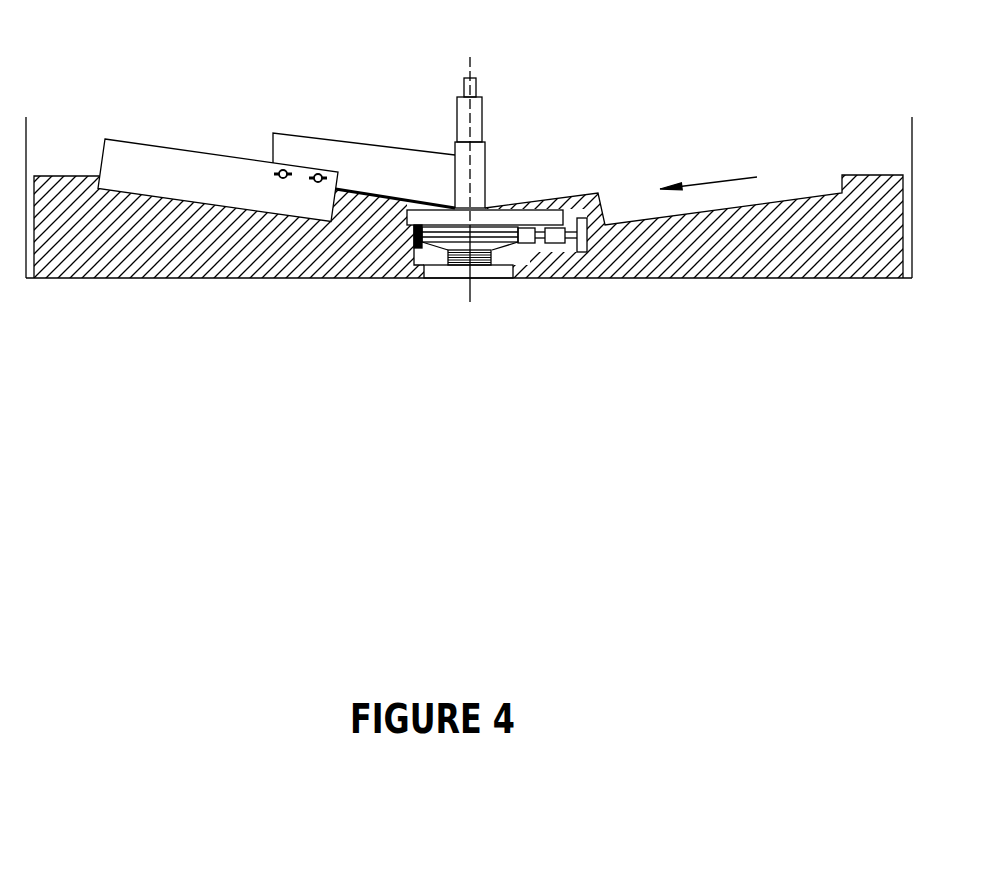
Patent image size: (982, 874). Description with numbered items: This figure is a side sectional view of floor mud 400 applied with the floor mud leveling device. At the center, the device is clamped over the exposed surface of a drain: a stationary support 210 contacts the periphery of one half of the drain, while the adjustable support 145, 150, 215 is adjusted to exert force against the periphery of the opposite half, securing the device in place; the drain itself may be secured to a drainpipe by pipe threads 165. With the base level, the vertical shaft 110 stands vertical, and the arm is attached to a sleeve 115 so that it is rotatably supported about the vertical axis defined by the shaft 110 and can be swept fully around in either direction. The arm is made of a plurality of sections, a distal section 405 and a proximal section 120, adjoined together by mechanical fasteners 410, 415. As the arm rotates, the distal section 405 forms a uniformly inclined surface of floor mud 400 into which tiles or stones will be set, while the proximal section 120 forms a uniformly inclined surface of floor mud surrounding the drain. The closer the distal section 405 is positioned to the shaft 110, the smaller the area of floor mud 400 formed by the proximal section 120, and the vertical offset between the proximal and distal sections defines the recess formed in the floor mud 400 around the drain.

The vertical shaft 110 is at (483, 117).
The sleeve 115 is at (485, 173).
The proximal section of the arm 120 is at (385, 157).
The adjustable support 145 is at (586, 252).
The adjustable support 150 is at (554, 245).
The pipe threads 165 is at (469, 265).
The stationary support 210 is at (420, 246).
The adjustable support 215 is at (525, 243).
The floor mud 400 is at (793, 197).
The distal section of the arm 405 is at (126, 157).
The mechanical fastener 410 is at (278, 172).
The mechanical fastener 415 is at (318, 176).